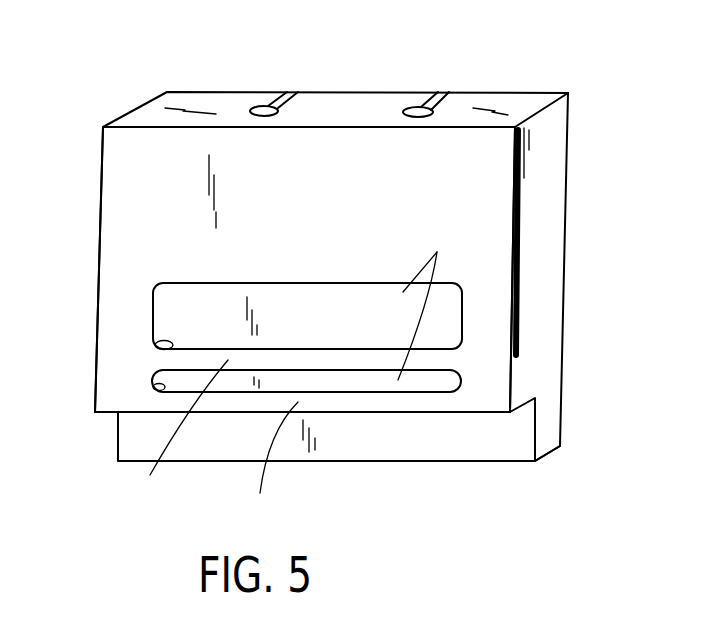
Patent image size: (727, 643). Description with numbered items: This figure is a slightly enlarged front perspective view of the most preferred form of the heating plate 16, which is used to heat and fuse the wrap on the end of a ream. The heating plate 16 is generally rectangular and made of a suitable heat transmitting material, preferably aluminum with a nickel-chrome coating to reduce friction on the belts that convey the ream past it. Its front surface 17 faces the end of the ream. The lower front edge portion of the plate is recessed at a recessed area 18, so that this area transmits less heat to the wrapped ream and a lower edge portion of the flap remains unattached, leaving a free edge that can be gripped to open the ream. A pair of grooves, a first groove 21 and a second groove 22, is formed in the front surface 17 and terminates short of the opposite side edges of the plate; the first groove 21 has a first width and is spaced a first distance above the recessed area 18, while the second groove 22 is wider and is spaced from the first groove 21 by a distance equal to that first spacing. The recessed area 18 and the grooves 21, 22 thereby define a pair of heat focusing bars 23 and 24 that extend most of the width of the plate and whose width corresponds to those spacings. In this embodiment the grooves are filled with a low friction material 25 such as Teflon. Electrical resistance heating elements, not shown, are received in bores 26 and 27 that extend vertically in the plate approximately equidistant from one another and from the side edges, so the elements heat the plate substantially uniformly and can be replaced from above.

The heating plate 16 is at (600, 306).
The front surface 17 is at (135, 217).
The recessed area 18 is at (493, 447).
The first groove 21 is at (153, 386).
The second groove 22 is at (153, 337).
The heat focusing bar 23 is at (266, 466).
The heat focusing bar 24 is at (174, 436).
The low friction material 25 is at (425, 302).
The bore 26 is at (255, 108).
The bore 27 is at (410, 112).